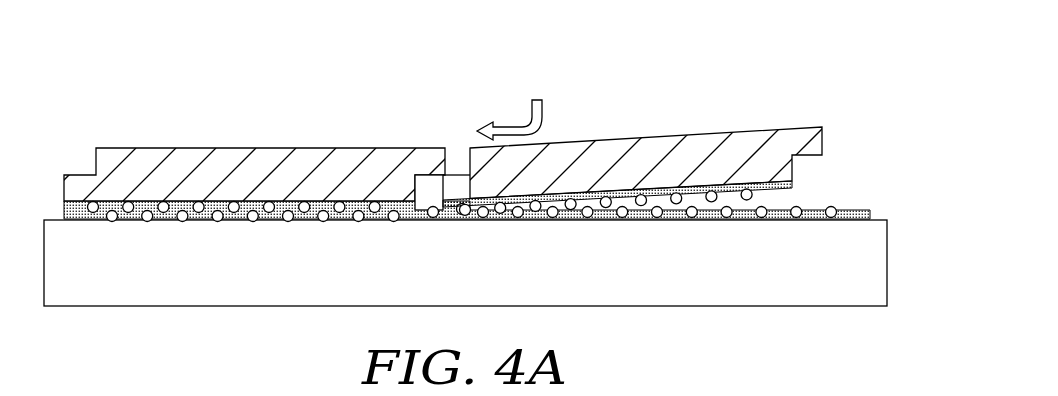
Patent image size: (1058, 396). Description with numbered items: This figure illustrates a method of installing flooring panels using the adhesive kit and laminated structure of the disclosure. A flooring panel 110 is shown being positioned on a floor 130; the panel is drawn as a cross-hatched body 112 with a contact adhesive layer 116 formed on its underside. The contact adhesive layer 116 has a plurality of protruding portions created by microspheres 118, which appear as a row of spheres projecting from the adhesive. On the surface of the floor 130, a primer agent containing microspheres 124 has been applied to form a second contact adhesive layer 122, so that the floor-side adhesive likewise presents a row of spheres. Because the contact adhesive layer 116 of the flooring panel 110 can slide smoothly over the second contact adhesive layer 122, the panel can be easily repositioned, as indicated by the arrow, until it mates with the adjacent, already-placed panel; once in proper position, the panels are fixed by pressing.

The flooring panel 110 is at (609, 108).
The cover layer 112 is at (742, 145).
The contact adhesive layer 116 is at (792, 189).
The microspheres 118 is at (713, 190).
The second contact adhesive layer 122 is at (870, 211).
The microspheres 124 is at (834, 210).
The floor 130 is at (852, 252).